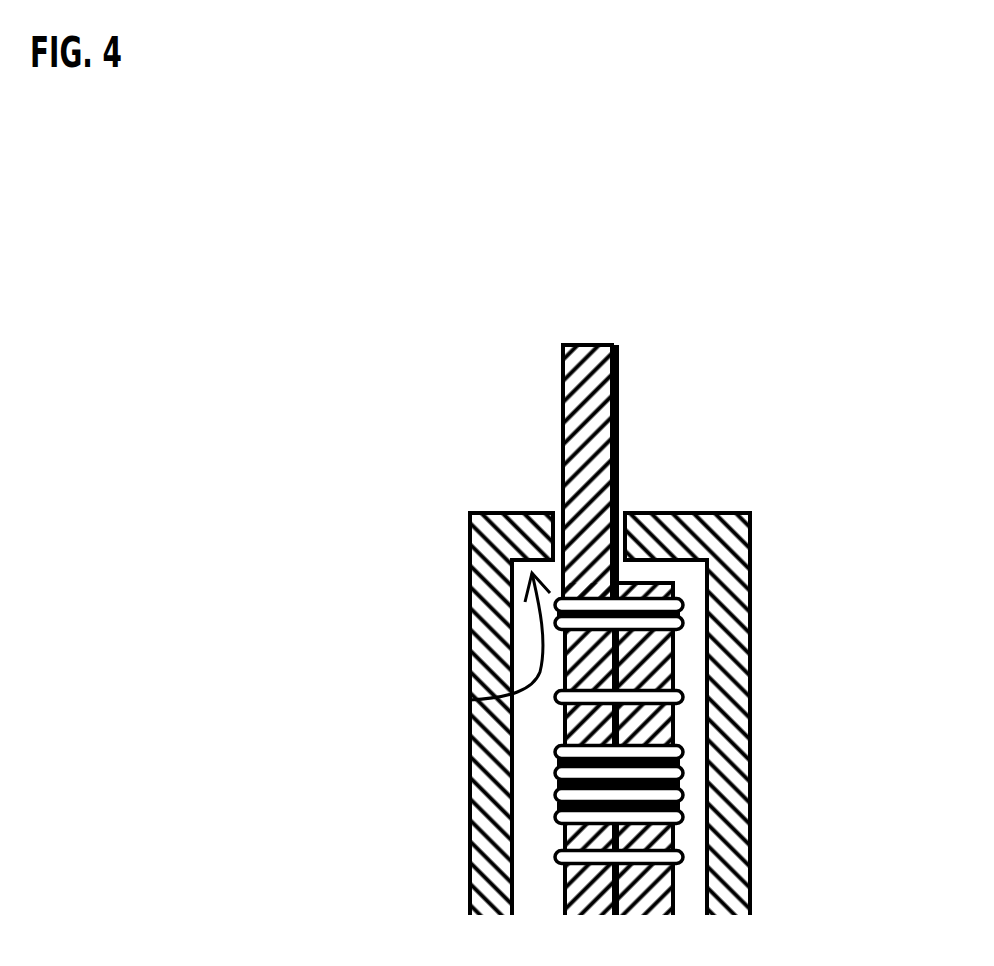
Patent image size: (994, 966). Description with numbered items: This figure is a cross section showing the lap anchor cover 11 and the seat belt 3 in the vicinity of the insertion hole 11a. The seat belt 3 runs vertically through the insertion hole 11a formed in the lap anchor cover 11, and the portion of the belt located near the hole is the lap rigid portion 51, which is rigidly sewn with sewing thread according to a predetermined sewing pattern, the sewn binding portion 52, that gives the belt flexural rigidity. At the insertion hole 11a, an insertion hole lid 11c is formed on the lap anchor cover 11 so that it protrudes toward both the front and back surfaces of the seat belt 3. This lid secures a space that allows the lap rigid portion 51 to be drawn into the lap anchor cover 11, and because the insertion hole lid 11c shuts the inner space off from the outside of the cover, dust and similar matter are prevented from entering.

The seat belt 3 is at (563, 393).
The lap anchor cover 11 is at (470, 800).
The insertion hole 11a is at (470, 700).
The insertion hole lid 11c is at (530, 513).
The lap rigid portion 51 is at (673, 648).
The sewn binding portion 52 is at (673, 750).